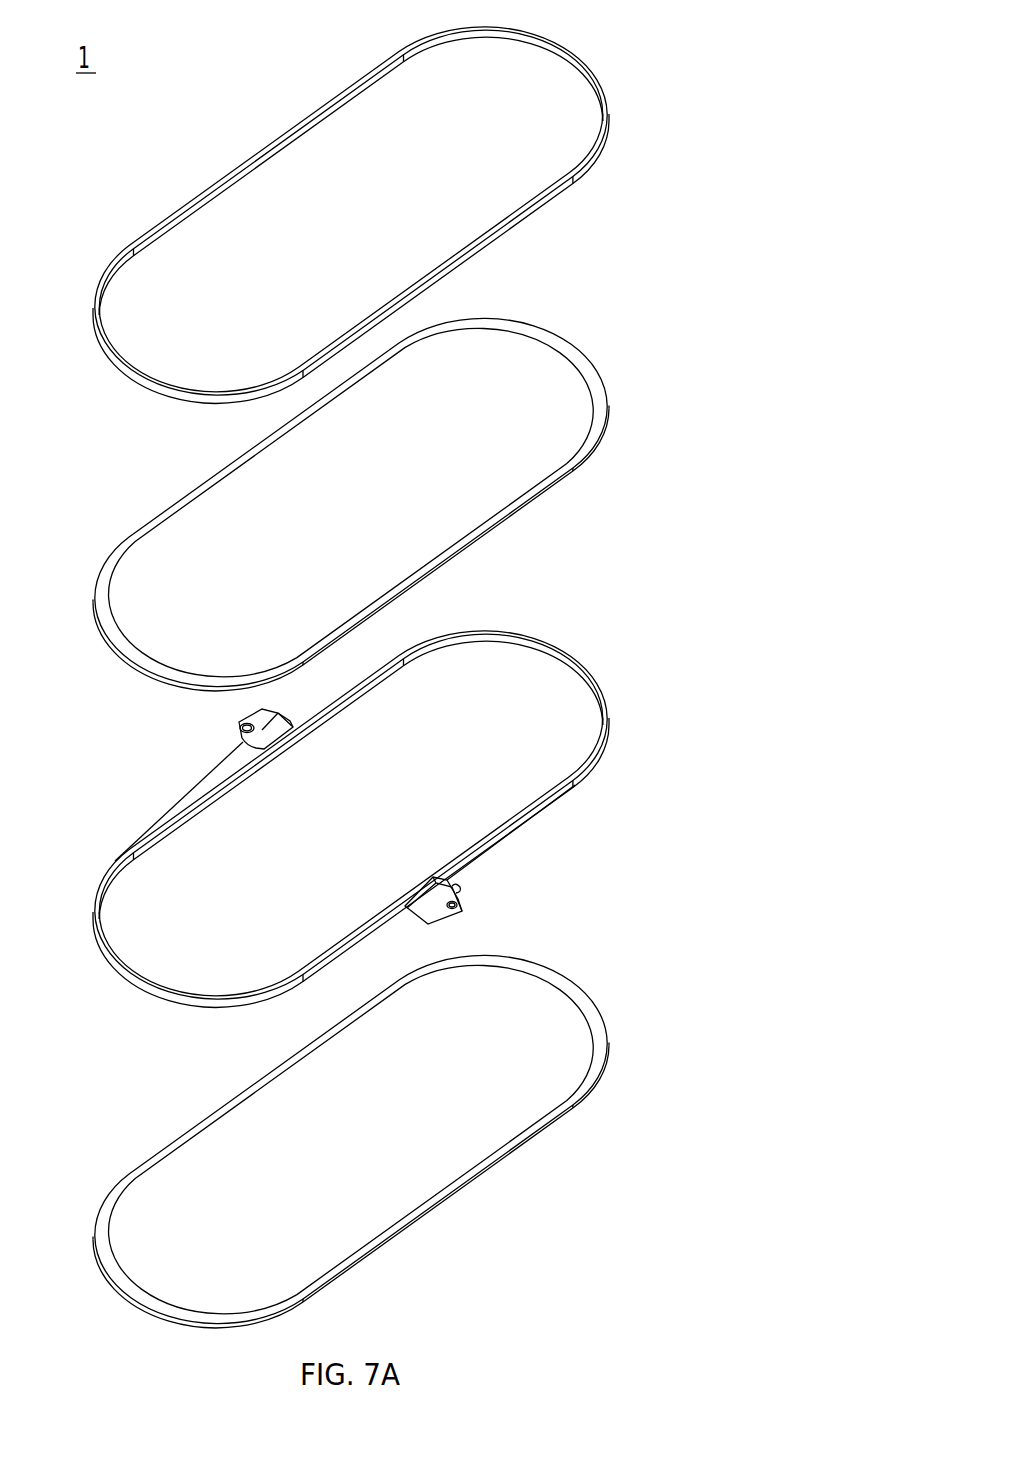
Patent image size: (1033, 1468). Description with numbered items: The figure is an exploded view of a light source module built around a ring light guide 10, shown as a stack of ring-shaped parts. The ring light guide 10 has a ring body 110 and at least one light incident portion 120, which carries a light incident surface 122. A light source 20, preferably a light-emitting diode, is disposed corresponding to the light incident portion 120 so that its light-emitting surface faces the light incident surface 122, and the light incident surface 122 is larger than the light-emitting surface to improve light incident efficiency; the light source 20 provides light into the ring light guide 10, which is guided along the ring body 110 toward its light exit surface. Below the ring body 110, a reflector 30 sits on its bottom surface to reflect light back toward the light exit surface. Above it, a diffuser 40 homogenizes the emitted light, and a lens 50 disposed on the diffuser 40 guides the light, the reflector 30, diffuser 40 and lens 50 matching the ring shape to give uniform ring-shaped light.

The ring light guide 10 is at (407, 819).
The ring body 110 is at (587, 670).
The light incident portion 120 is at (488, 842).
The light incident surface 122 is at (460, 890).
The light source 20 is at (253, 737).
The reflector 30 is at (582, 963).
The diffuser 40 is at (583, 328).
The lens 50 is at (592, 40).